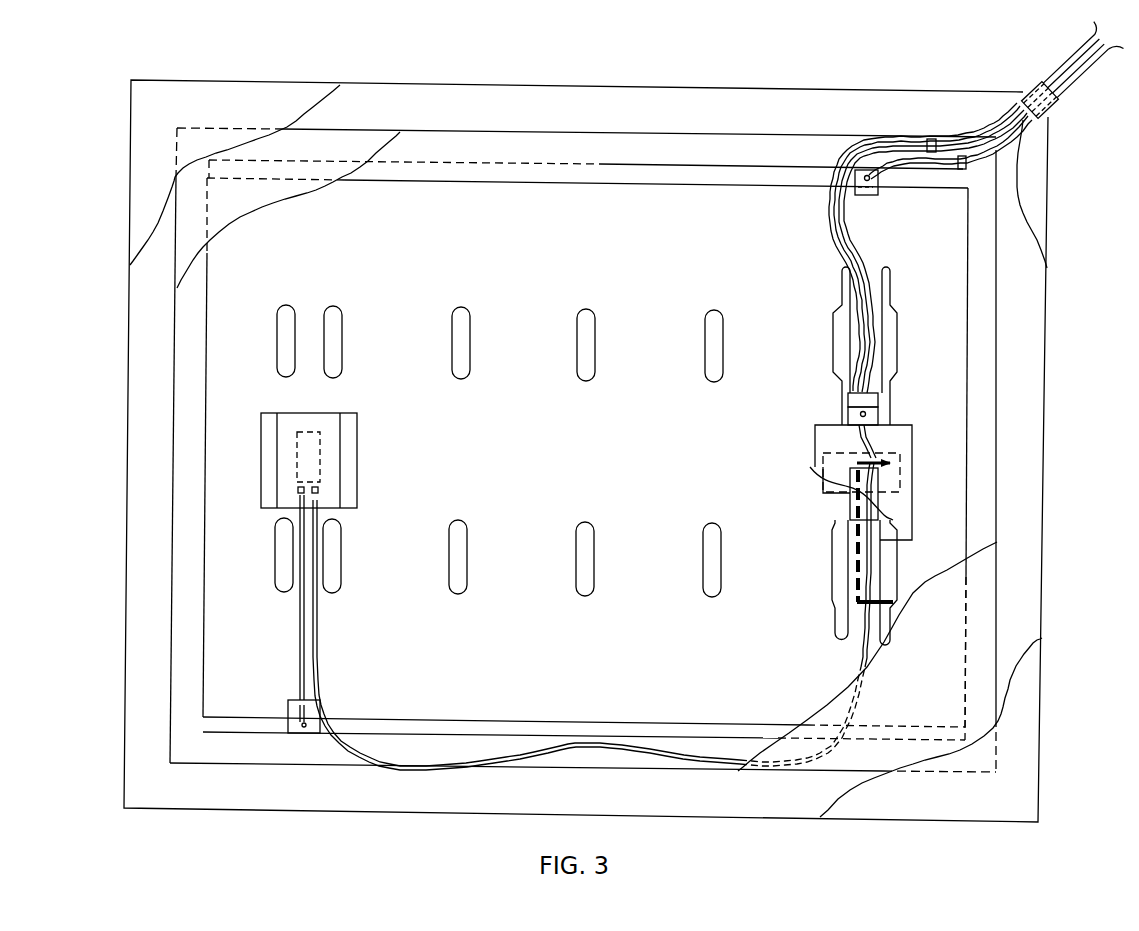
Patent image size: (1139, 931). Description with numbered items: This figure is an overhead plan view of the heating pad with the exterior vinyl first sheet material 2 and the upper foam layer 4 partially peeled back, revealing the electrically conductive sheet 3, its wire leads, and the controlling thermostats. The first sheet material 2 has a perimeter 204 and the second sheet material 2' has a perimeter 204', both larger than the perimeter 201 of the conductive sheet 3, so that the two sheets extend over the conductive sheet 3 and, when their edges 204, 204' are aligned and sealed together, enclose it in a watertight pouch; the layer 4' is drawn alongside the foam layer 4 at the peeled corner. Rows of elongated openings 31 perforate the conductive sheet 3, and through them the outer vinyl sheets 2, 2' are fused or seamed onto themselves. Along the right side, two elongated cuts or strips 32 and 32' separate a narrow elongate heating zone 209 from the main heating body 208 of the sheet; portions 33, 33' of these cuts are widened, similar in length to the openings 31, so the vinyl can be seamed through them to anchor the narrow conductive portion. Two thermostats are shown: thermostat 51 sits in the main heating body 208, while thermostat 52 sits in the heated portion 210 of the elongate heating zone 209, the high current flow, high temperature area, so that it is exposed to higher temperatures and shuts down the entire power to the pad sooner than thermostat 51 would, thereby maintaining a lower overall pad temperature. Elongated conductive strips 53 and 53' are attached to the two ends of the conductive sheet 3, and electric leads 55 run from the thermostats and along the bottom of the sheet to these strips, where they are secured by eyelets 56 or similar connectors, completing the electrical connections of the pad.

The first sheet material 2 is at (586, 421).
The second sheet material 2' is at (339, 142).
The electrically conductive sheet 3 is at (572, 238).
The upper foam layer 4 is at (288, 157).
The cover flap 4' is at (875, 147).
The elongated openings 31 is at (455, 585).
The elongated cut 32 is at (976, 350).
The elongated cut 32' is at (980, 378).
The widened portion of elongated cut 33 is at (995, 440).
The widened portion of elongated cut 33' is at (797, 453).
The thermostat 51 is at (308, 458).
The thermostat 52 is at (865, 548).
The conductive strip 53 is at (656, 107).
The conductive strip 53' is at (584, 790).
The electric leads 55 is at (908, 155).
The eyelets 56 is at (300, 730).
The perimeter of conductive sheet 201 is at (228, 688).
The perimeter of first sheet material 204 is at (525, 450).
The perimeter of second sheet material 204' is at (506, 450).
The main heating body 208 is at (587, 463).
The elongate heating zone 209 is at (873, 363).
The heated portion 210 is at (845, 578).